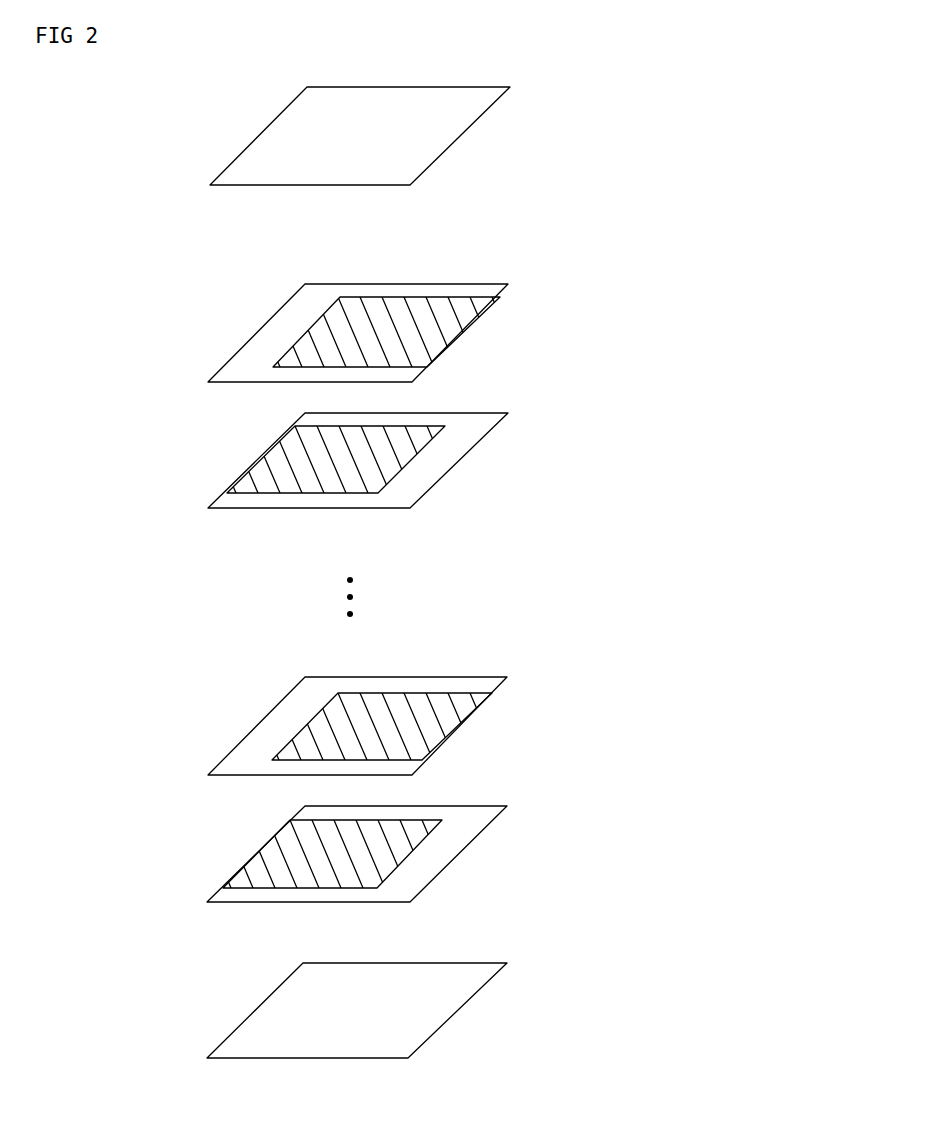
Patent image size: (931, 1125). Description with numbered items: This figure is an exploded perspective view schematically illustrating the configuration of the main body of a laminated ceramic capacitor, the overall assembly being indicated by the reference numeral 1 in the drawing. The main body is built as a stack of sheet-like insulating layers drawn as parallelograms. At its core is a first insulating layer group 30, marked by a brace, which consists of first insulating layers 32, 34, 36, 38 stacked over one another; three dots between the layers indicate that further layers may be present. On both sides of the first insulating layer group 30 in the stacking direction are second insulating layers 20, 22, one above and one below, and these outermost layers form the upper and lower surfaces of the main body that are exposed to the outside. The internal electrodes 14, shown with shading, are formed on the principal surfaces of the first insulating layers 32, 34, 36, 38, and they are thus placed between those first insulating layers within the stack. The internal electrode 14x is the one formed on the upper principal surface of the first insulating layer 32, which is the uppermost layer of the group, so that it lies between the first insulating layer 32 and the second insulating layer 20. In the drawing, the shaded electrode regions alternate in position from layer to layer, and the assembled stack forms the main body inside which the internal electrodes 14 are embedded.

The multilayer ceramic capacitor / laminated body 1 is at (722, 133).
The second insulating layer 20 is at (493, 140).
The second insulating layer 22 is at (468, 1017).
The first insulating layer group 30 is at (457, 557).
The first insulating layer 32 is at (408, 297).
The first insulating layer 34 is at (480, 472).
The first insulating layer 36 is at (408, 684).
The first insulating layer 38 is at (408, 854).
The internal electrode 14 is at (395, 712).
The internal electrode 14x is at (438, 310).